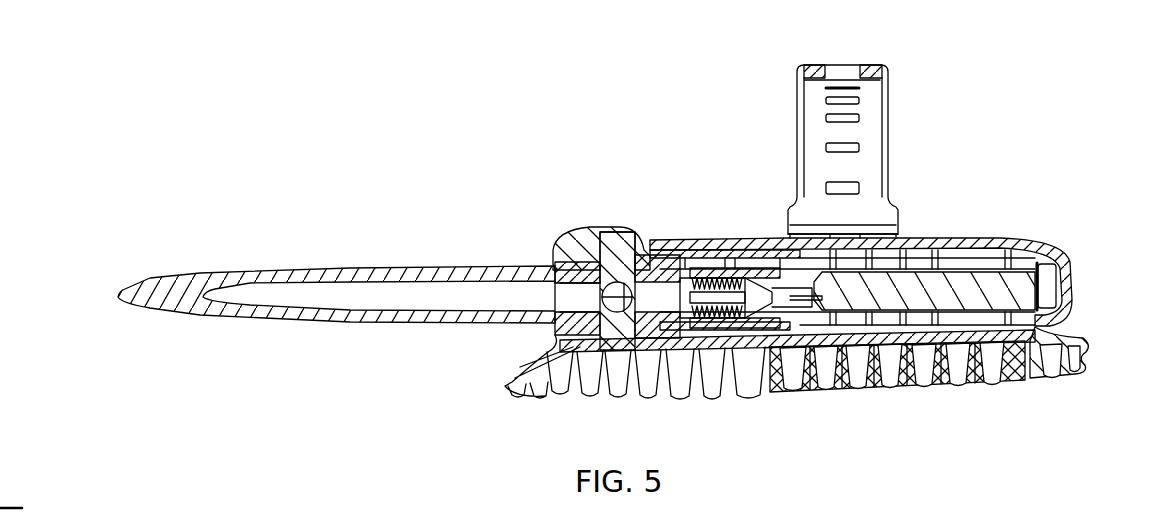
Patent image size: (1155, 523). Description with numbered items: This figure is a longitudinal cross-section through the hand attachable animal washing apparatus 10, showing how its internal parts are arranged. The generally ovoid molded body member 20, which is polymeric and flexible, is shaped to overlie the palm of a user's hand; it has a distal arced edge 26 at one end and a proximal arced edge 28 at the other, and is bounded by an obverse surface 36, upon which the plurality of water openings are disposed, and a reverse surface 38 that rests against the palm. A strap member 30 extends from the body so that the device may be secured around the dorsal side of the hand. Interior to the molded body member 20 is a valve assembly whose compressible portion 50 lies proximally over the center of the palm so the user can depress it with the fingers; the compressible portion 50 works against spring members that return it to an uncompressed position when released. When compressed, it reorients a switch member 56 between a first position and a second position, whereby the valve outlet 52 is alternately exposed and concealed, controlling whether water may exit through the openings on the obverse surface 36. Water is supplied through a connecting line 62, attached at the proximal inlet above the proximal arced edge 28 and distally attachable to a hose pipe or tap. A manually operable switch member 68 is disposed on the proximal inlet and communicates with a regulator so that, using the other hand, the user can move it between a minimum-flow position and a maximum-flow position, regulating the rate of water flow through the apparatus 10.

The hand attachable animal washing apparatus 10 is at (1022, 89).
The molded body member 20 is at (983, 181).
The distal arced edge 26 is at (1085, 350).
The proximal arced edge 28 is at (505, 387).
The strap member 30 is at (797, 125).
The obverse surface 36 is at (993, 394).
The reverse surface 38 is at (918, 207).
The compressible portion 50 is at (1050, 290).
The valve outlet 52 is at (790, 312).
The switch member 56 is at (763, 305).
The connecting line 62 is at (432, 268).
The manually operable switch member 68 is at (608, 232).